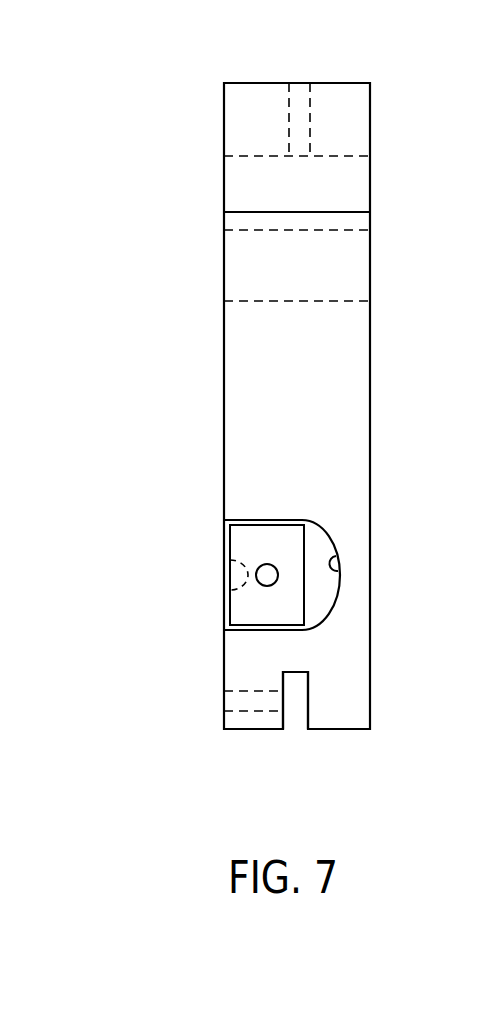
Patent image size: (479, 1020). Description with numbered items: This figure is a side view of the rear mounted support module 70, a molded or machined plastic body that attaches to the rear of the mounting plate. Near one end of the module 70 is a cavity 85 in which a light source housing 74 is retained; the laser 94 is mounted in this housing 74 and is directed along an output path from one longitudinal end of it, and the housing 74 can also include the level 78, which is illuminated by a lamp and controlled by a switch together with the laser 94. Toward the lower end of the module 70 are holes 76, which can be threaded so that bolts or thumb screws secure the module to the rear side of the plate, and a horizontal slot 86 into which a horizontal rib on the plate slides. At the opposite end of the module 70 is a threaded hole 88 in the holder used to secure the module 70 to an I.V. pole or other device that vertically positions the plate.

The support module 70 is at (360, 423).
The light source housing 74 is at (255, 607).
The holes 76 is at (233, 701).
The level 78 is at (230, 573).
The cavity 85 is at (339, 572).
The slot 86 is at (295, 710).
The threaded hole 88 is at (309, 94).
The laser 94 is at (262, 562).